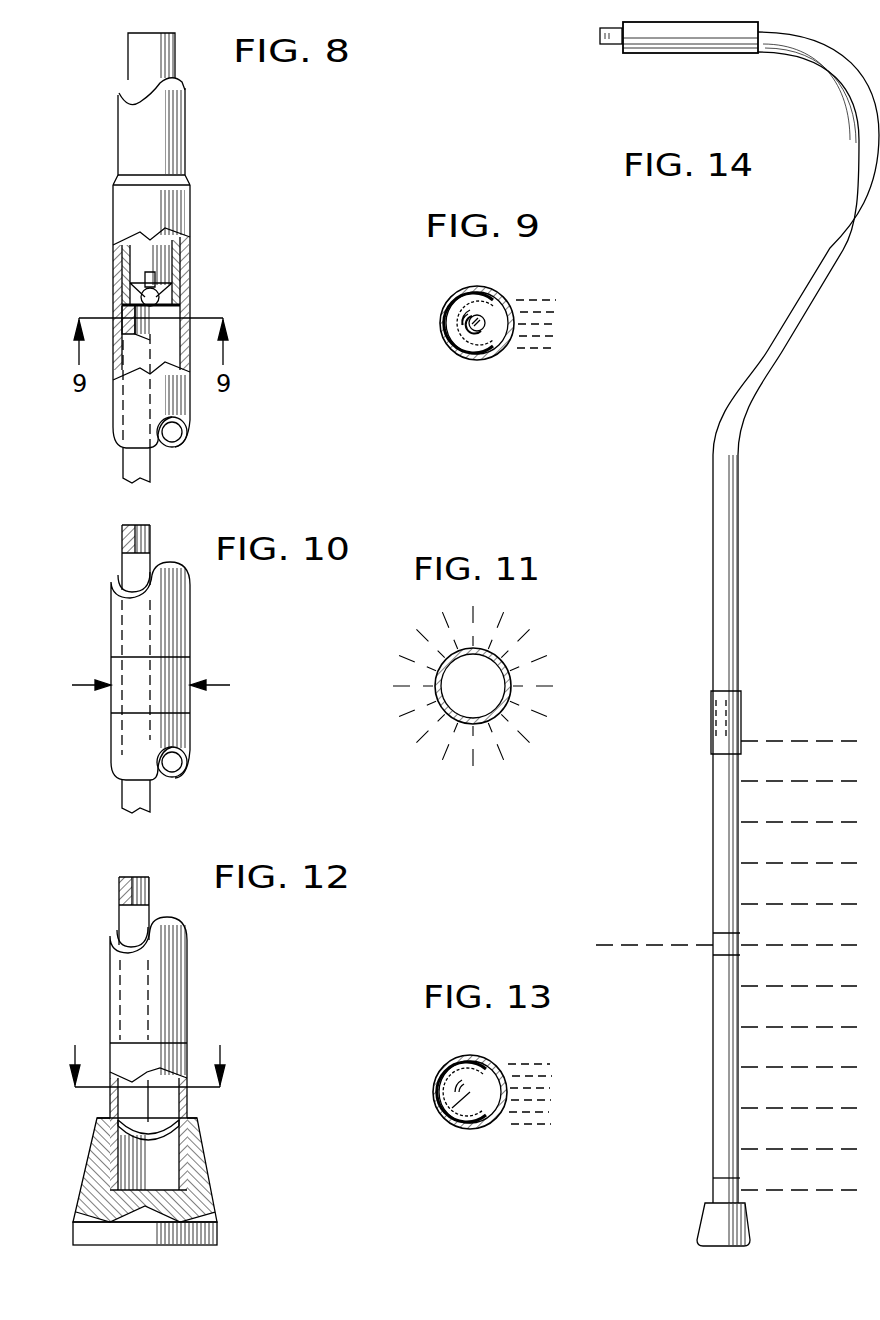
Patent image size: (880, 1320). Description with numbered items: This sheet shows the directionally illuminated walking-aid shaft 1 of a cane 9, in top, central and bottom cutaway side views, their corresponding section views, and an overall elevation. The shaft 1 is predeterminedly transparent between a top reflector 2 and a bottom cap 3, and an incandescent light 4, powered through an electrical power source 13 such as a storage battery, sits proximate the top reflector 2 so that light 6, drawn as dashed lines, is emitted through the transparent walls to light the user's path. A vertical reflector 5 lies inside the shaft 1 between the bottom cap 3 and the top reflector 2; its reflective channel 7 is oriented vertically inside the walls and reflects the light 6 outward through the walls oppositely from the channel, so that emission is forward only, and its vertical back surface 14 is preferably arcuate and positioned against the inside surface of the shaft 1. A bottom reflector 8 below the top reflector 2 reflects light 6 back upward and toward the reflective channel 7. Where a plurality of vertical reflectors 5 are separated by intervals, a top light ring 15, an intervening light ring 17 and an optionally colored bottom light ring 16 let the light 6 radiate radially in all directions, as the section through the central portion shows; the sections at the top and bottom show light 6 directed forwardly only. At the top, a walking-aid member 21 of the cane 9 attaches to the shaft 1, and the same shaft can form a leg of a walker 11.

In FIG. 8, the walking-aid shaft 1 is at (190, 405).
In FIG. 9, the walking-aid shaft 1 is at (456, 302).
In FIG. 10, the walking-aid shaft 1 is at (111, 598).
In FIG. 12, the walking-aid shaft 1 is at (110, 960).
In FIG. 13, the walking-aid shaft 1 is at (455, 1062).
In FIG. 14, the walking-aid shaft 1 is at (712, 805).
In FIG. 8, the top reflector 2 is at (182, 286).
In FIG. 9, the top reflector 2 is at (503, 306).
In FIG. 12, the bottom cap 3 is at (195, 1158).
In FIG. 14, the bottom cap 3 is at (720, 1232).
In FIG. 8, the incandescent light 4 is at (160, 300).
In FIG. 9, the incandescent light 4 is at (486, 322).
In FIG. 8, the vertical reflector 5 is at (135, 462).
In FIG. 9, the vertical reflector 5 is at (458, 318).
In FIG. 10, the vertical reflector 5 is at (140, 572).
In FIG. 12, the vertical reflector 5 is at (130, 925).
In FIG. 13, the vertical reflector 5 is at (450, 1092).
In FIG. 9, the light 6 is at (530, 345).
In FIG. 11, the light 6 is at (420, 690).
In FIG. 13, the light 6 is at (530, 1104).
In FIG. 14, the light 6 is at (640, 945).
In FIG. 8, the reflective channel 7 is at (146, 334).
In FIG. 9, the reflective channel 7 is at (457, 349).
In FIG. 10, the reflective channel 7 is at (140, 525).
In FIG. 12, the reflective channel 7 is at (135, 877).
In FIG. 12, the bottom reflector 8 is at (145, 1128).
In FIG. 13, the bottom reflector 8 is at (449, 1112).
In FIG. 14, the cane 9 is at (543, 104).
In FIG. 10, the walker 11 is at (150, 686).
In FIG. 8, the electrical power source 13 is at (150, 248).
In FIG. 12, the electrical power source 13 is at (148, 1048).
In FIG. 9, the vertical back surface 14 is at (455, 334).
In FIG. 14, the top light ring 15 is at (708, 740).
In FIG. 12, the bottom light ring 16 is at (140, 1043).
In FIG. 14, the bottom light ring 16 is at (724, 1192).
In FIG. 10, the intervening light ring 17 is at (130, 668).
In FIG. 11, the intervening light ring 17 is at (441, 665).
In FIG. 14, the intervening light ring 17 is at (722, 947).
In FIG. 8, the walking-aid member 21 is at (178, 150).